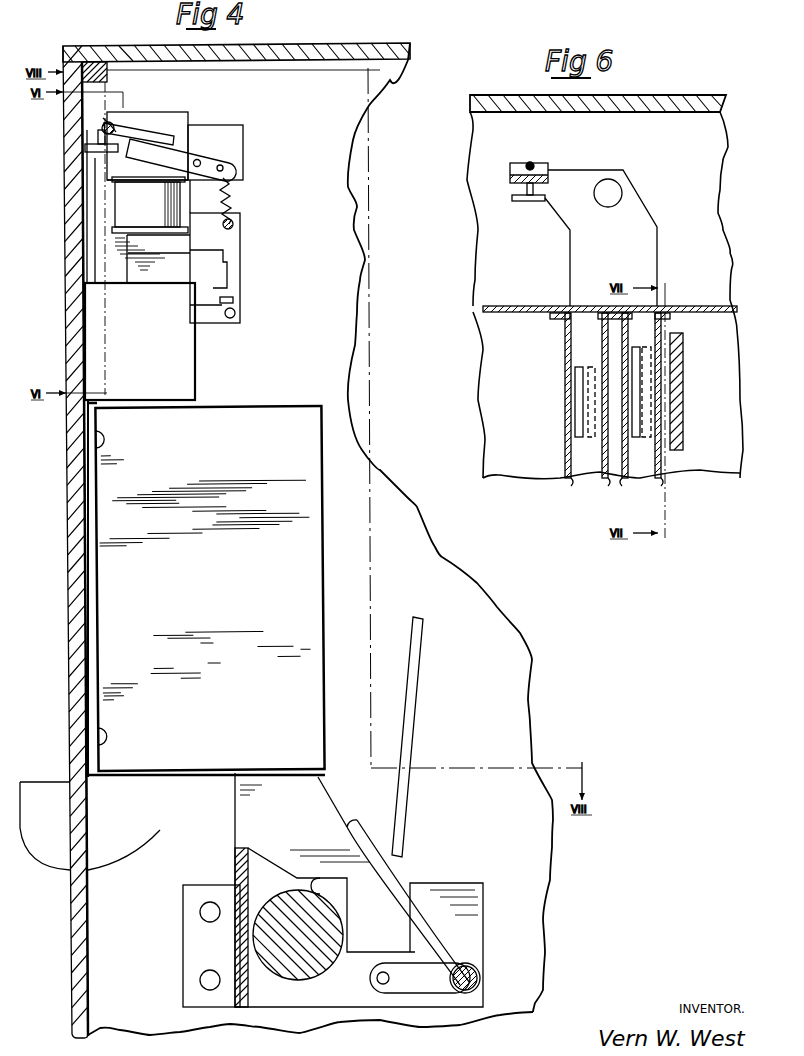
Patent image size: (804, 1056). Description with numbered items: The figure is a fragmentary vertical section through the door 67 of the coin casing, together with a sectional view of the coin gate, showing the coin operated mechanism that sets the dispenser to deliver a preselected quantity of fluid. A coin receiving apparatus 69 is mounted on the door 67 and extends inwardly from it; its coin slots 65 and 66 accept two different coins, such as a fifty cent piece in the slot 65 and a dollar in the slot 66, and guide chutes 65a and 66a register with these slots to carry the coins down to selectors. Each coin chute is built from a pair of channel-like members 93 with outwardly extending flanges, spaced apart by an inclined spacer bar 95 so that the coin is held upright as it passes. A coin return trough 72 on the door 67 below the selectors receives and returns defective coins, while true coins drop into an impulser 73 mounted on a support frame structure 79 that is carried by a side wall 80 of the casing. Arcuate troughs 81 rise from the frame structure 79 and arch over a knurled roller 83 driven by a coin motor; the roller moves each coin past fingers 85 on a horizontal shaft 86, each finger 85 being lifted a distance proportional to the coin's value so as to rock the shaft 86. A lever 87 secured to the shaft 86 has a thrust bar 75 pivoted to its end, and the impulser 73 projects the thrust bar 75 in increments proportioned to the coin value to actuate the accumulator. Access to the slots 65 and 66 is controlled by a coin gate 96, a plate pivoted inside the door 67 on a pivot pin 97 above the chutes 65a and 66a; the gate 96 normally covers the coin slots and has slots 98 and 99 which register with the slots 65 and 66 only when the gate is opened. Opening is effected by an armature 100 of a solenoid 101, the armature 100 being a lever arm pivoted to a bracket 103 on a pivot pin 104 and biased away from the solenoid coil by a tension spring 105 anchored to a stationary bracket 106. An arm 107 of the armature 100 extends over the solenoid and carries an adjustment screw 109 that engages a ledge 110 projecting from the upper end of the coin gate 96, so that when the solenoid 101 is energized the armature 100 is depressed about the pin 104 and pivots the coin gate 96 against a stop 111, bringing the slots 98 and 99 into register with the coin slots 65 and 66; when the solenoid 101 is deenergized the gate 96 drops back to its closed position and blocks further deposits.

In FIG. 6, the coin slot 65 is at (593, 391).
In FIG. 6, the guide chute 65a is at (570, 481).
In FIG. 6, the coin slot 66 is at (655, 341).
In FIG. 6, the guide chute 66a is at (658, 481).
In FIG. 4, the door 67 is at (70, 502).
In FIG. 6, the door 67 is at (712, 197).
In FIG. 4, the coin receiving apparatus 69 is at (326, 559).
In FIG. 4, the coin return trough 72 is at (197, 773).
In FIG. 4, the impulser 73 is at (487, 893).
In FIG. 4, the thrust bar 75 is at (415, 705).
In FIG. 4, the support frame structure 79 is at (290, 1002).
In FIG. 4, the side wall 80 is at (139, 987).
In FIG. 4, the trough 81 is at (325, 883).
In FIG. 4, the knurled roller 83 is at (320, 965).
In FIG. 4, the finger 85 is at (361, 822).
In FIG. 4, the horizontal shaft 86 is at (479, 975).
In FIG. 4, the lever 87 is at (422, 987).
In FIG. 4, the channel-like member 93 is at (197, 366).
In FIG. 6, the channel-like member 93 is at (563, 452).
In FIG. 6, the spacer bar 95 is at (663, 458).
In FIG. 4, the coin gate 96 is at (95, 190).
In FIG. 6, the coin gate 96 is at (659, 249).
In FIG. 6, the pivot pin 97 is at (617, 187).
In FIG. 6, the slot 98 is at (580, 367).
In FIG. 6, the slot 99 is at (636, 347).
In FIG. 4, the armature 100 is at (160, 141).
In FIG. 4, the solenoid 101 is at (145, 219).
In FIG. 4, the bracket 103 is at (177, 162).
In FIG. 4, the pivot pin 104 is at (198, 160).
In FIG. 4, the tension spring 105 is at (232, 195).
In FIG. 4, the stationary bracket 106 is at (241, 240).
In FIG. 4, the arm 107 is at (119, 136).
In FIG. 6, the arm 107 is at (516, 170).
In FIG. 4, the adjustment screw 109 is at (98, 120).
In FIG. 6, the adjustment screw 109 is at (533, 163).
In FIG. 4, the ledge 110 is at (112, 150).
In FIG. 6, the ledge 110 is at (522, 202).
In FIG. 6, the stop 111 is at (684, 410).